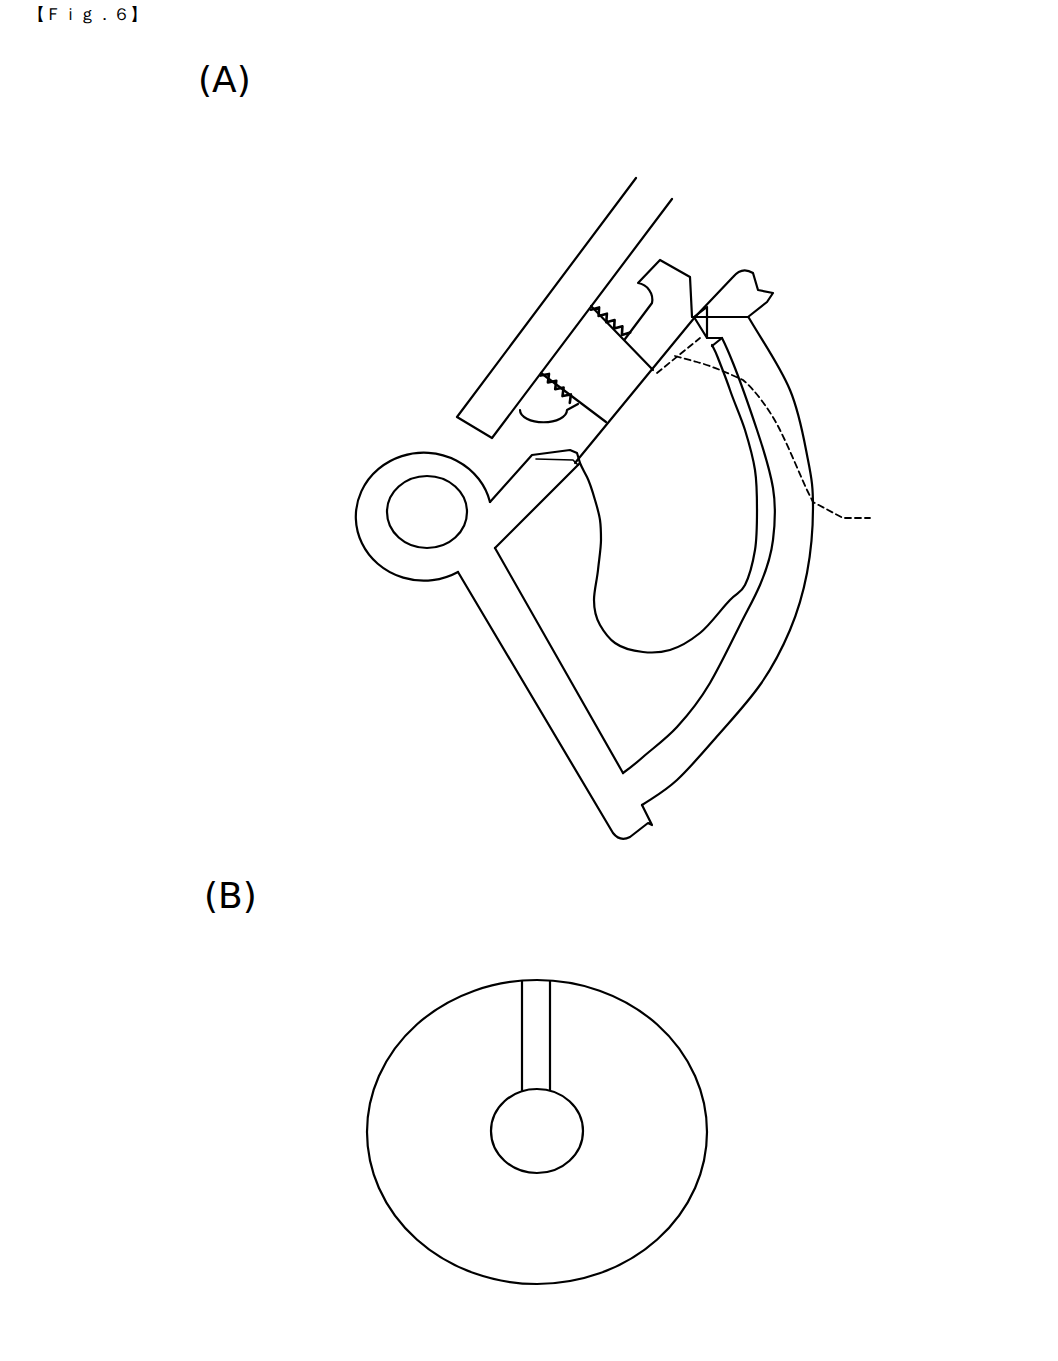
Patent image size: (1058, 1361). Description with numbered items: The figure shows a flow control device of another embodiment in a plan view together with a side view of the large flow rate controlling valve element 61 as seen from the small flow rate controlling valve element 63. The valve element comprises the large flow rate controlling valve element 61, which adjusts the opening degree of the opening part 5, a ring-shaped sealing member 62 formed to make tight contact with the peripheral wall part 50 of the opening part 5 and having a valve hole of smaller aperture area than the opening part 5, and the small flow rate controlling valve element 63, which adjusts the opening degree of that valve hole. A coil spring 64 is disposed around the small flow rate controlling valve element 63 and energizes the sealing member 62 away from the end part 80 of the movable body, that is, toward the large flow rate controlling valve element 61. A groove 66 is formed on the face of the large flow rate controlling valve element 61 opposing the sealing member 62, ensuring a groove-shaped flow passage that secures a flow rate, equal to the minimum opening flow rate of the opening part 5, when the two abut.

The opening part 5 is at (710, 315).
The peripheral wall part 50 is at (738, 292).
The large flow rate controlling valve element 61 is at (698, 573).
The sealing member 62 is at (660, 283).
The small flow rate controlling valve element 63 is at (600, 353).
The coil spring 64 is at (537, 380).
The groove 66 is at (548, 1036).
The end part 80 is at (578, 252).